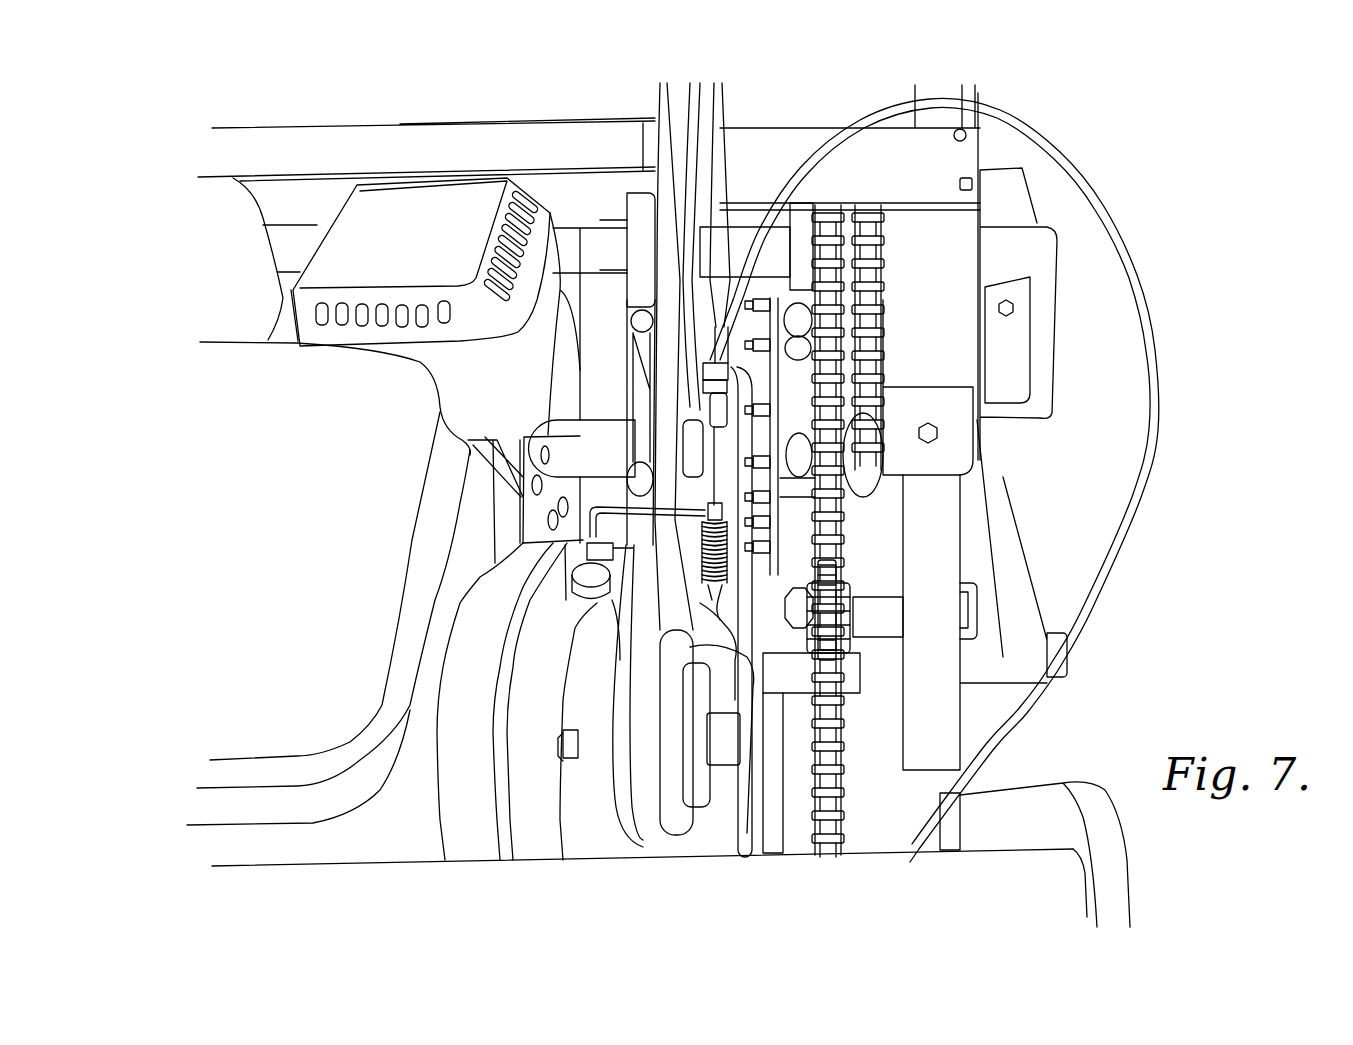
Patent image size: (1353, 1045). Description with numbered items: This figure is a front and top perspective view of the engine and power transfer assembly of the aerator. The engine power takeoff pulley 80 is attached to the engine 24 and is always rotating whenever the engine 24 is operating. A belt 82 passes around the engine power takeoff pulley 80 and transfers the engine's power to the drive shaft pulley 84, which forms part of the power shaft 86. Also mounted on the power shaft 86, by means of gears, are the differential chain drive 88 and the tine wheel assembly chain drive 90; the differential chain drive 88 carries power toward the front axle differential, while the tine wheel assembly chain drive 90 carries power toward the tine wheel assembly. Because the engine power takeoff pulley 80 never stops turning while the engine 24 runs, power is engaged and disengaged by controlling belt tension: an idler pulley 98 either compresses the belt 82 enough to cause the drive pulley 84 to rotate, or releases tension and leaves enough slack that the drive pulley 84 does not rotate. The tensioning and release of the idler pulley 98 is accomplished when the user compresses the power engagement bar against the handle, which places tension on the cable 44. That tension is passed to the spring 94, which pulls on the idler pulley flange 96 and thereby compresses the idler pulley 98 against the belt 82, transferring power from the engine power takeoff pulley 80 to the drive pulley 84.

The engine 24 is at (303, 578).
The cable 44 is at (1152, 436).
The engine power takeoff pulley 80 is at (683, 815).
The belt 82 is at (652, 820).
The drive shaft pulley 84 is at (710, 115).
The power shaft 86 is at (590, 247).
The differential chain drive 88 is at (832, 518).
The tine wheel assembly chain drive 90 is at (868, 237).
The spring 94 is at (723, 563).
The idler pulley flange 96 is at (720, 643).
The idler pulley 98 is at (700, 600).